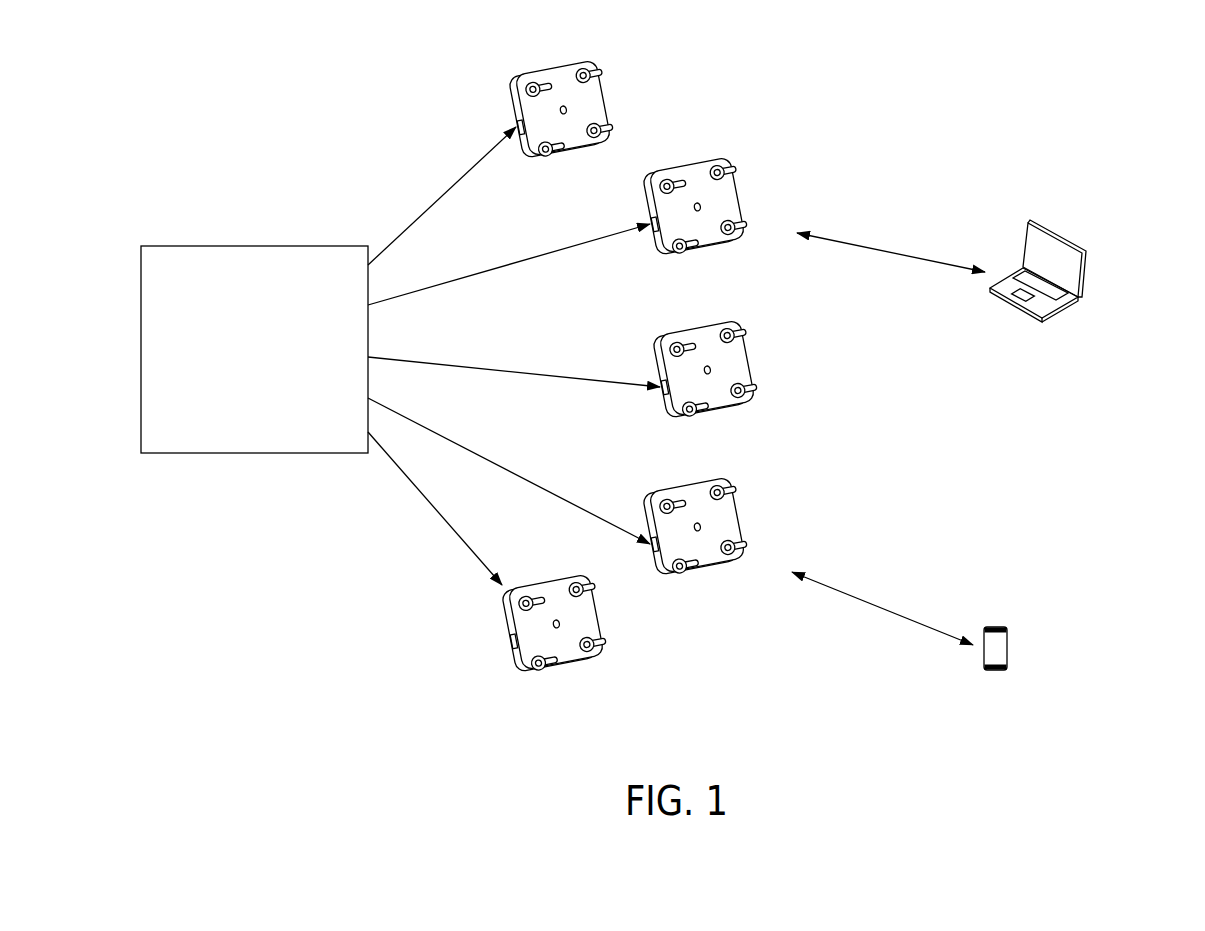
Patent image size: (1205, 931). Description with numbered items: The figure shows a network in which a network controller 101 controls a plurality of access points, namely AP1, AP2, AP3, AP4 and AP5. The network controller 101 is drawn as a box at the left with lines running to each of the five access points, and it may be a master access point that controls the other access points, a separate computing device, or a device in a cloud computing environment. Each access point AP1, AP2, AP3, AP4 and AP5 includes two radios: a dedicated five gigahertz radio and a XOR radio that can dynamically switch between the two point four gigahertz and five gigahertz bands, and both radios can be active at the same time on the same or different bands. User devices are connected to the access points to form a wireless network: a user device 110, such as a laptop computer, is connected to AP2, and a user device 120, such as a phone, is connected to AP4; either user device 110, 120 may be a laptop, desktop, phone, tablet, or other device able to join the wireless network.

The network controller 101 is at (275, 402).
The user device 110 is at (1065, 238).
The user device 120 is at (995, 622).
The access point AP1 is at (589, 109).
The access point AP2 is at (722, 206).
The access point AP3 is at (732, 369).
The access point AP4 is at (722, 526).
The access point AP5 is at (582, 623).